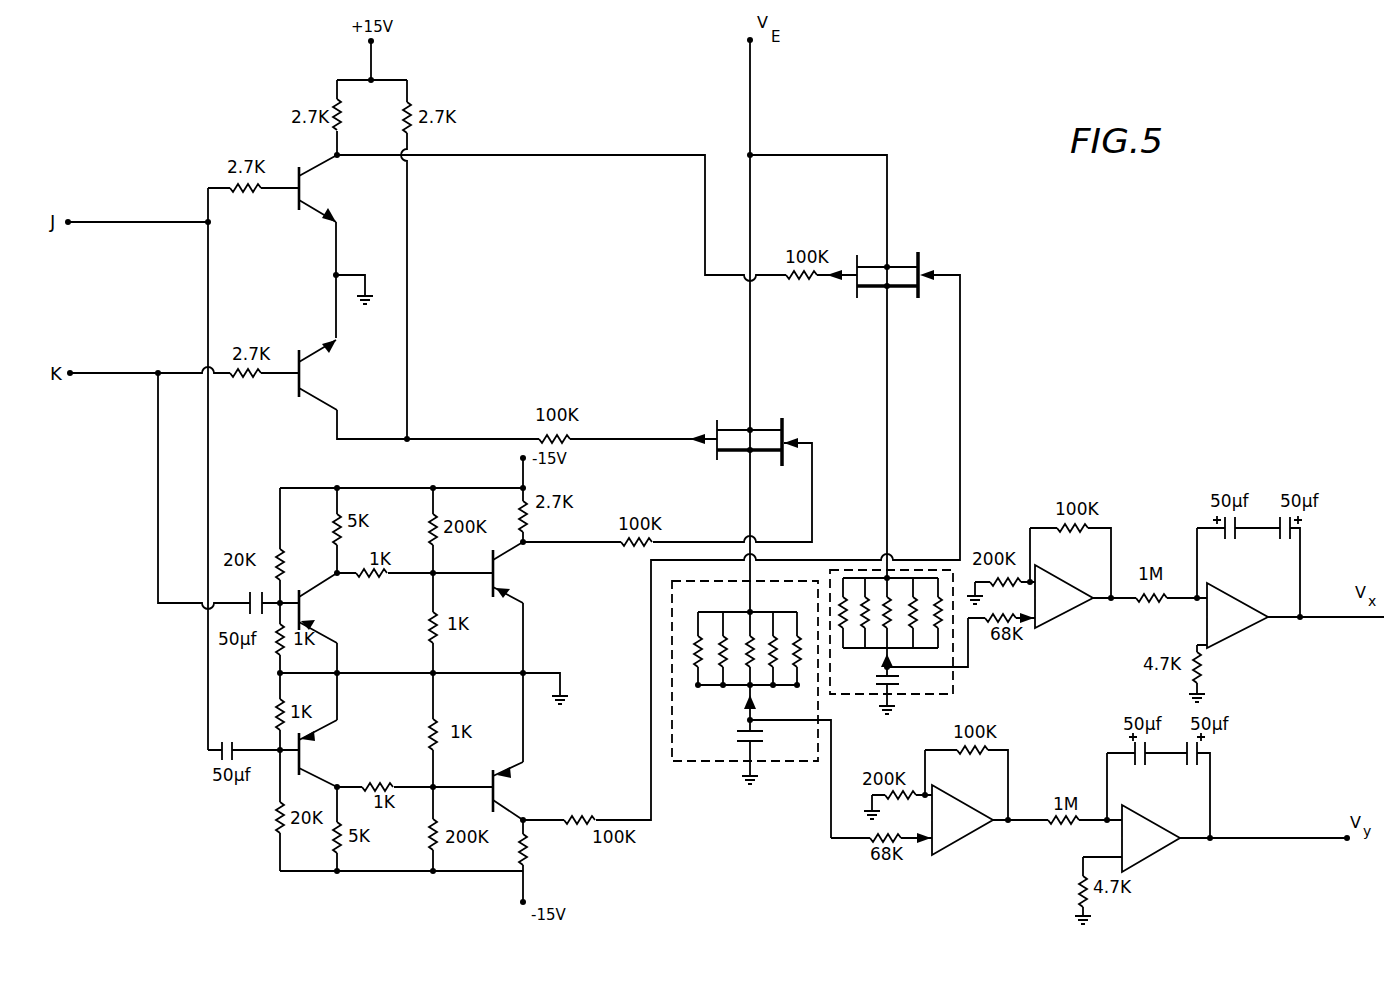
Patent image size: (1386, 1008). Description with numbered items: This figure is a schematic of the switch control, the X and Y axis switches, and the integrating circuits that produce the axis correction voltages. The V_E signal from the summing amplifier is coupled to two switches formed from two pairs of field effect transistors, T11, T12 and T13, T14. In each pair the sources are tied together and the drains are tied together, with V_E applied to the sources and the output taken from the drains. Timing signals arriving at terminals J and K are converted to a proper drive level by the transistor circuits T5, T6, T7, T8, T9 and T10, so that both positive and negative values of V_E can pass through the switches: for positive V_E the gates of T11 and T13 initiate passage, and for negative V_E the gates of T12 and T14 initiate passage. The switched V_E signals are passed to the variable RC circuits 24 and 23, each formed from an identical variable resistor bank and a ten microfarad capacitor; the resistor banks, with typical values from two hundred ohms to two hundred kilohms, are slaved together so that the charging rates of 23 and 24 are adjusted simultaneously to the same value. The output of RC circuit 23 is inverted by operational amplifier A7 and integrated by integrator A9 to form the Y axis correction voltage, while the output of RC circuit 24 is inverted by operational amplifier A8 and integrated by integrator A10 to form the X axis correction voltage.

The variable RC circuit 23 is at (780, 764).
The variable RC circuit 24 is at (906, 697).
The transistor T5 is at (338, 188).
The transistor T6 is at (342, 375).
The transistor T7 is at (343, 608).
The transistor T8 is at (341, 753).
The transistor T9 is at (544, 572).
The transistor T10 is at (539, 791).
The FET T11 is at (721, 456).
The FET T12 is at (774, 428).
The FET T13 is at (855, 301).
The FET T14 is at (926, 262).
The operational amplifier A7 is at (962, 824).
The operational amplifier A8 is at (1066, 598).
The integrator A9 is at (1151, 842).
The integrator A10 is at (1241, 618).